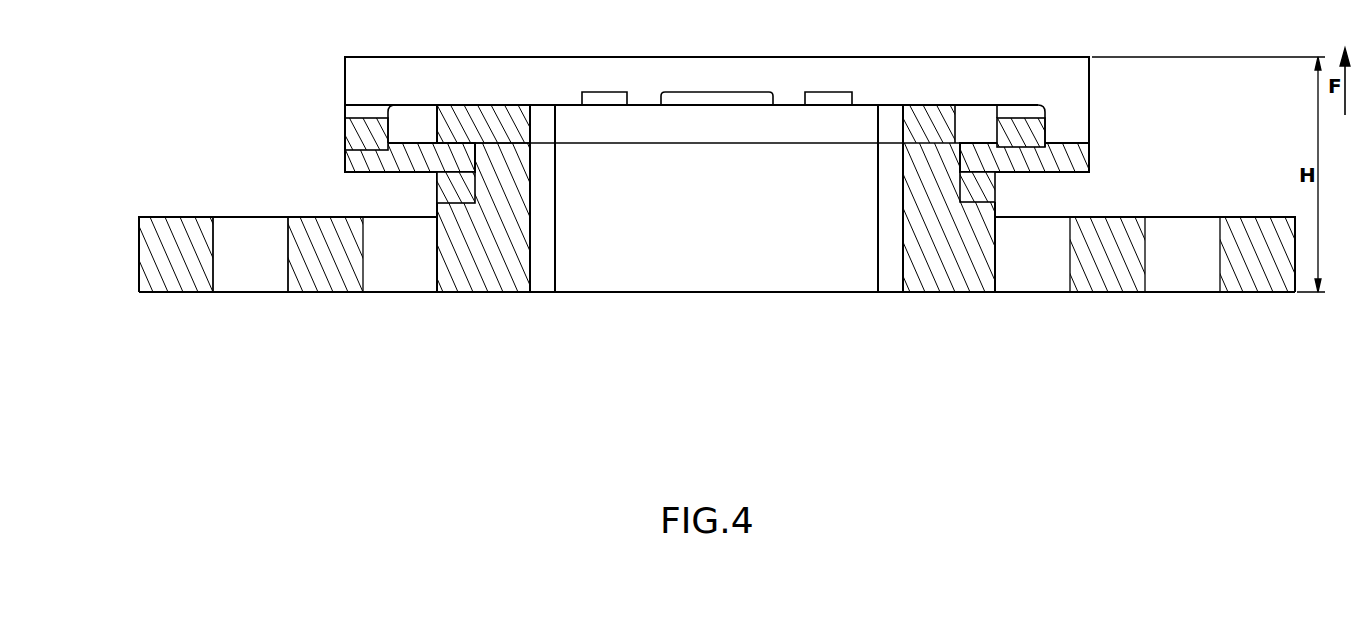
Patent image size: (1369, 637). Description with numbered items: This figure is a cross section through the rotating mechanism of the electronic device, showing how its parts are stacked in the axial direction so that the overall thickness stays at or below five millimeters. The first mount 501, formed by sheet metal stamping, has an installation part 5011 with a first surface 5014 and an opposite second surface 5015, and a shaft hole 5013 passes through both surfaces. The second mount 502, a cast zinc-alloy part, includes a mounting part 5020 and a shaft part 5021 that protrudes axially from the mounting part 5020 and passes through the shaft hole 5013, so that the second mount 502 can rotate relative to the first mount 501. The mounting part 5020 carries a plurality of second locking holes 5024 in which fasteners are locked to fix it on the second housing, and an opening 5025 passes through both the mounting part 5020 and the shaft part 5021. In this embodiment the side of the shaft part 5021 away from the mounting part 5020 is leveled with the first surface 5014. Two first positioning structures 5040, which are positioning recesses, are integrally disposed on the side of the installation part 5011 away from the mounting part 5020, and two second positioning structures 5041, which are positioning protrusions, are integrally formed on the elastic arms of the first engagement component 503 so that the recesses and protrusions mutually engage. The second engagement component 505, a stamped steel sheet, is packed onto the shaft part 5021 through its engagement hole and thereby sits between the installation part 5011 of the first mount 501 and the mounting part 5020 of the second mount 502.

The first mount 501 is at (334, 160).
The second mount 502 is at (133, 264).
The first engagement component 503 is at (334, 81).
The second engagement component 505 is at (455, 192).
The installation part 5011 is at (418, 163).
The shaft hole 5013 is at (480, 145).
The first surface 5014 is at (415, 132).
The second surface 5015 is at (366, 178).
The mounting part 5020 is at (148, 216).
The shaft part 5021 is at (507, 156).
The second locking holes 5024 is at (243, 248).
The opening 5025 is at (787, 192).
The first positioning structures 5040 is at (365, 135).
The second positioning structures 5041 is at (348, 130).